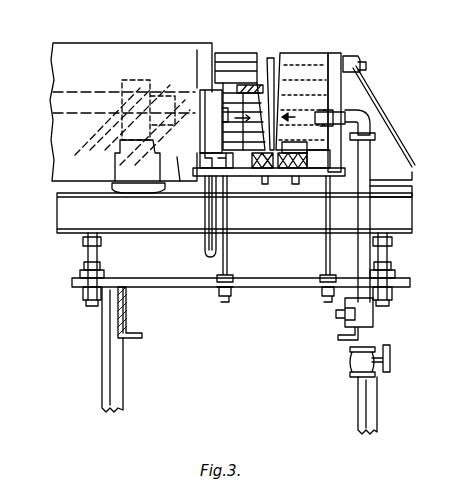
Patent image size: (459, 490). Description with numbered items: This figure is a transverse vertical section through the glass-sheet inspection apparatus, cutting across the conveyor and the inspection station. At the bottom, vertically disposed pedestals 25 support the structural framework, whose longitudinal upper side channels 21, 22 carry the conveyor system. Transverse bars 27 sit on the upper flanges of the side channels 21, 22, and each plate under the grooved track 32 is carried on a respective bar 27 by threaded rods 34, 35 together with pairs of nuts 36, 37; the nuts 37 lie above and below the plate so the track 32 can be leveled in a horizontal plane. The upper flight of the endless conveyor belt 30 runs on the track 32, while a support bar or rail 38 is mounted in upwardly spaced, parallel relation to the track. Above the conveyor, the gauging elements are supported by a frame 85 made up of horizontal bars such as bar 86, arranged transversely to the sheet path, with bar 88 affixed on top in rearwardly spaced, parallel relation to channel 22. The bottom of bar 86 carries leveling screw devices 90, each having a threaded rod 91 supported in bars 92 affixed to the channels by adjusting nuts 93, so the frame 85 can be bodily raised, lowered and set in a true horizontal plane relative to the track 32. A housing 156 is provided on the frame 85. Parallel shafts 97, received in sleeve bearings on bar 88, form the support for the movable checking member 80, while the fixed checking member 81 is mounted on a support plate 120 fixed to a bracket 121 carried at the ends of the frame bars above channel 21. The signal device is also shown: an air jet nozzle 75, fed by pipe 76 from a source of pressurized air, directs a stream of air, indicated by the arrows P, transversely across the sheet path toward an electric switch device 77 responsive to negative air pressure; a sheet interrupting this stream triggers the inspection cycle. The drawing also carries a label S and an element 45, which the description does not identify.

The shafts 97 is at (131, 112).
The frame bar 88 is at (137, 194).
The housing 156 is at (177, 184).
The electric switch device 77 is at (210, 128).
The movable checking member 80 is at (244, 64).
The support bar or rail 38 is at (237, 88).
The blade S is at (268, 91).
The fixed checking member 81 is at (290, 76).
The support plate 120 is at (338, 92).
The air jet nozzle 75 is at (350, 116).
The pipe 76 is at (368, 146).
The bracket 121 is at (397, 175).
The nuts 37 is at (332, 172).
The arrows indicating air stream P is at (297, 116).
The block 45 is at (297, 150).
The frame 85 is at (147, 226).
The horizontal bar 86 is at (185, 226).
The threaded rod 35 is at (228, 251).
The threaded rod 34 is at (327, 251).
The endless conveyor belt 30 is at (267, 185).
The grooved track 32 is at (296, 185).
The transverse bars 27 is at (178, 288).
The nuts 36 is at (231, 290).
The leveling screw device 90 is at (78, 252).
The threaded rod 91 is at (84, 266).
The adjusting nuts 93 is at (102, 276).
The bars 92 is at (84, 289).
The upper side channel 22 is at (128, 312).
The pedestal 25 is at (112, 378).
The upper side channel 21 is at (345, 331).